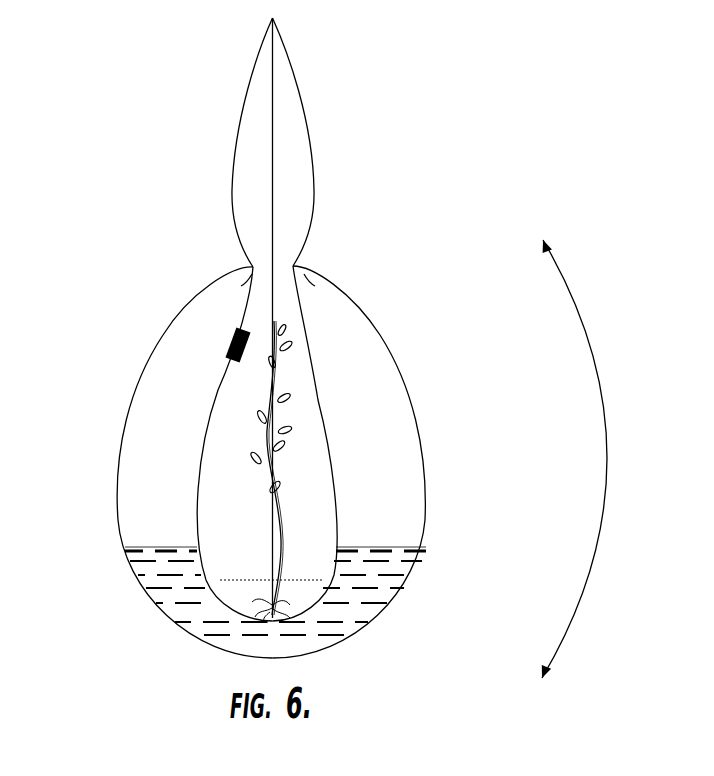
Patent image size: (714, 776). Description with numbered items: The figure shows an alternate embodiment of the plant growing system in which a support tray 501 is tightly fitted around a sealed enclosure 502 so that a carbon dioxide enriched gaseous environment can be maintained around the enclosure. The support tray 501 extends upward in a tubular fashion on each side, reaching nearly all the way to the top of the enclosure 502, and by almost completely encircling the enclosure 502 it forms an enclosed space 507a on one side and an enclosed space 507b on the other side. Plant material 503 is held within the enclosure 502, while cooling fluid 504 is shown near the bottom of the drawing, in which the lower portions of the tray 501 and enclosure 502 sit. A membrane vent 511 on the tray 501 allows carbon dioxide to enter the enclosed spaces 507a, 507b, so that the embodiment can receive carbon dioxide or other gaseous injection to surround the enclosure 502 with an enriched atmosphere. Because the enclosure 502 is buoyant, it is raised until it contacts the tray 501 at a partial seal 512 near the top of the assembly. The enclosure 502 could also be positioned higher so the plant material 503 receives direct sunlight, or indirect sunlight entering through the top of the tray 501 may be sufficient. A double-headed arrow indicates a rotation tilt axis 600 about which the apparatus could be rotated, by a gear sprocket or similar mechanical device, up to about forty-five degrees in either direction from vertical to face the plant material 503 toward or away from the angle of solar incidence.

The support tray 501 is at (402, 370).
The enclosure 502 is at (274, 322).
The plant material 503 is at (280, 375).
The cooling fluid 504 is at (363, 595).
The enclosed space 507a is at (152, 510).
The enclosed space 507b is at (388, 522).
The membrane vent 511 is at (223, 341).
The partial seal 512 is at (303, 263).
The rotation tilt axis 600 is at (581, 298).